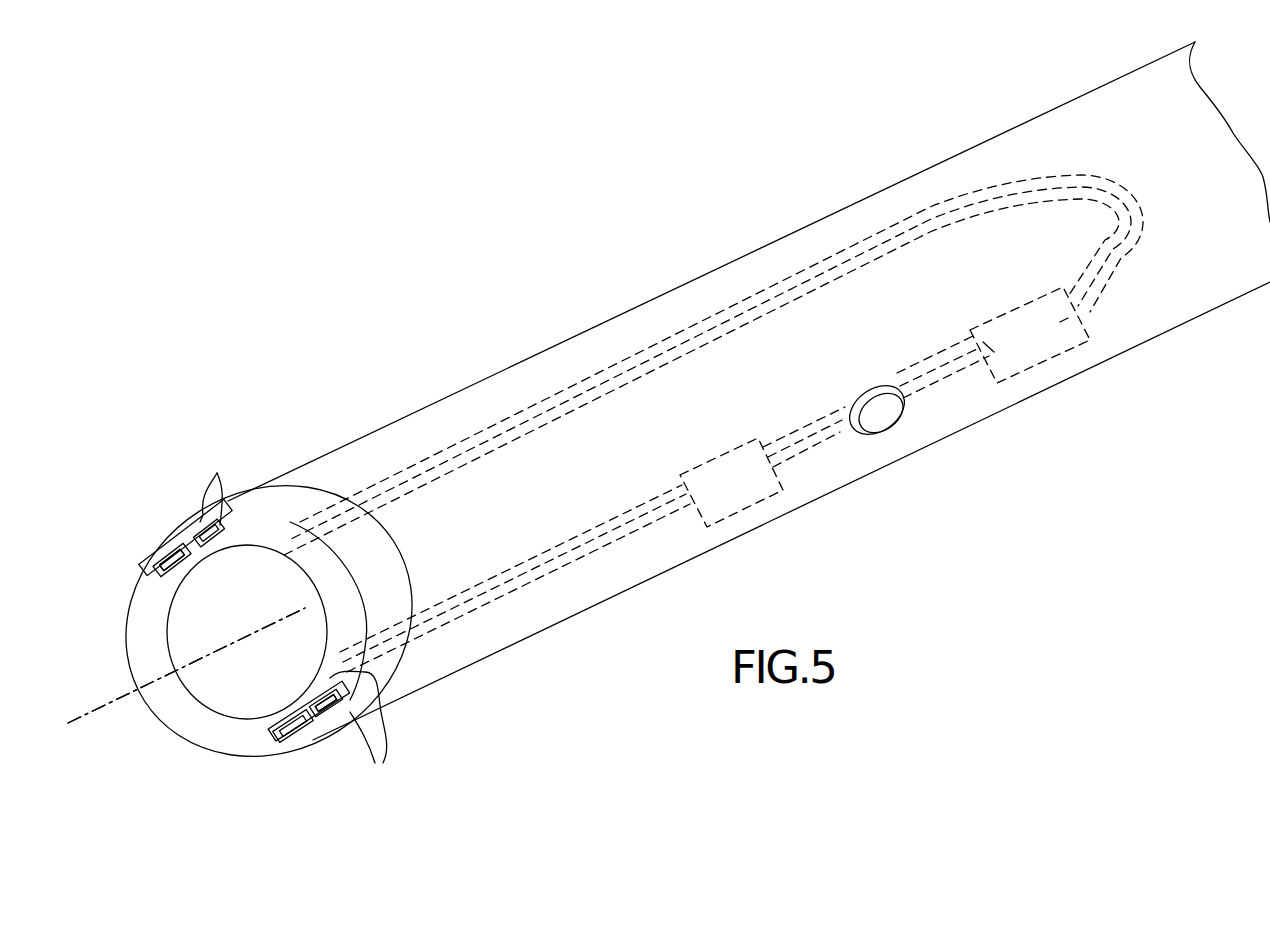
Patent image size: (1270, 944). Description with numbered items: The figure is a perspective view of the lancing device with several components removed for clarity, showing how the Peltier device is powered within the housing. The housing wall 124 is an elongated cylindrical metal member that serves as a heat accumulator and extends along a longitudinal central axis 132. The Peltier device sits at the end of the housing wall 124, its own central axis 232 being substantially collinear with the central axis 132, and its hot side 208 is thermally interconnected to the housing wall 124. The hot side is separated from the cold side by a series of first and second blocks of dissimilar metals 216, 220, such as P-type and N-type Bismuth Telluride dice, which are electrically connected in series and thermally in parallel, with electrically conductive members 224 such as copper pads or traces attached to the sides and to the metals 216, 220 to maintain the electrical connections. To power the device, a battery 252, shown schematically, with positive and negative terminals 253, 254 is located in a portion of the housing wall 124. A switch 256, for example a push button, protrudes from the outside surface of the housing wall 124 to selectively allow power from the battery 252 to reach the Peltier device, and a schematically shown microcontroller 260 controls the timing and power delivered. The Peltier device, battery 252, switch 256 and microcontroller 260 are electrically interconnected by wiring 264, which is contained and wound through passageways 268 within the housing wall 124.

The housing wall 124 is at (380, 430).
The central axis 132 is at (120, 697).
The central axis 232 is at (186, 665).
The hot side 208 is at (238, 500).
The first metal 216 is at (183, 533).
The second metal 220 is at (155, 553).
The electrically conductive members 224 is at (282, 808).
The wiring 264 is at (340, 700).
The passageways 268 is at (530, 583).
The microcontroller 260 is at (757, 507).
The switch 256 is at (892, 427).
The battery 252 is at (1063, 352).
The positive terminal 253 is at (990, 347).
The negative terminal 254 is at (1065, 322).